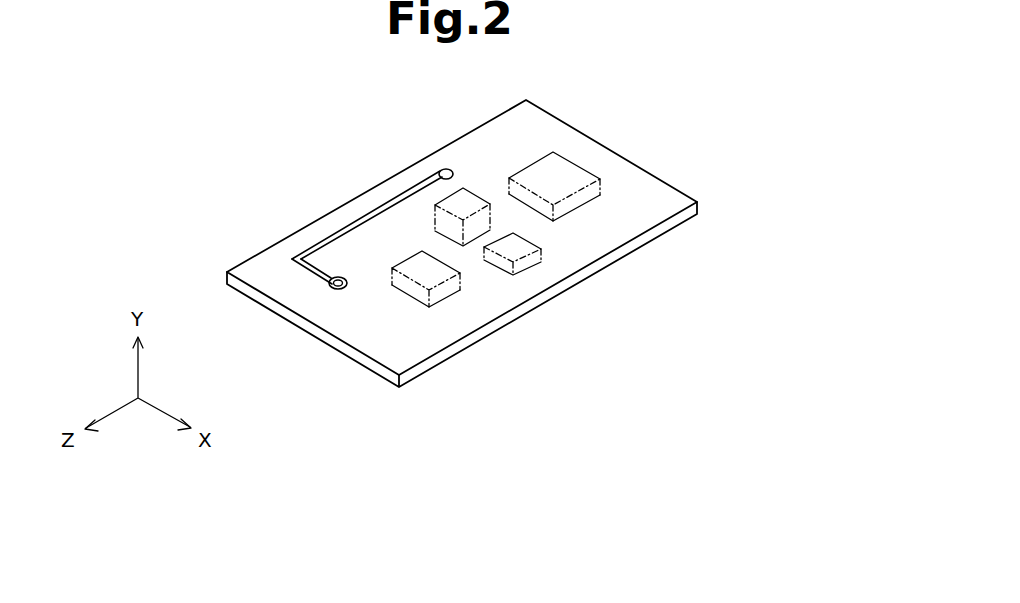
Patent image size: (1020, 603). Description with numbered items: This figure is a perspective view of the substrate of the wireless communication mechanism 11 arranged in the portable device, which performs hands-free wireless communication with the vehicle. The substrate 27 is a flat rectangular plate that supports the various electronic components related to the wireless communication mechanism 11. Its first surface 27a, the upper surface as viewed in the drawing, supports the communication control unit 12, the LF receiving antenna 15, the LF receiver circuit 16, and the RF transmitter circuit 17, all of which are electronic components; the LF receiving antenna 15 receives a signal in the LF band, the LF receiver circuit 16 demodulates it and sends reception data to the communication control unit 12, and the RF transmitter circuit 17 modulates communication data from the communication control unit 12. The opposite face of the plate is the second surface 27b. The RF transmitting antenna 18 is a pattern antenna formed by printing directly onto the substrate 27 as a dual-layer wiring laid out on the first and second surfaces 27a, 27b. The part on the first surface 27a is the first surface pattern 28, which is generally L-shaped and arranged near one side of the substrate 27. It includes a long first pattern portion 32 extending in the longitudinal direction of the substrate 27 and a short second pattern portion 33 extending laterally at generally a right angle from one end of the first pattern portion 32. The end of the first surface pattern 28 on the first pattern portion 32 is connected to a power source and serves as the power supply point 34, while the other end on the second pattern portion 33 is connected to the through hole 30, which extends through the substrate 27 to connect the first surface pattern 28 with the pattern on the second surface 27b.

The wireless communication mechanism 11 is at (285, 110).
The communication control unit 12 is at (573, 213).
The LF receiving antenna 15 is at (532, 271).
The LF receiver circuit 16 is at (467, 243).
The RF transmitter circuit 17 is at (445, 301).
The RF transmitting antenna 18 is at (380, 297).
The substrate 27 is at (673, 223).
The first surface 27a is at (651, 181).
The second surface 27b is at (572, 289).
The first surface pattern 28 is at (340, 230).
The through hole 30 is at (344, 290).
The first pattern portion 32 is at (387, 207).
The second pattern portion 33 is at (318, 264).
The power supply point 34 is at (452, 172).